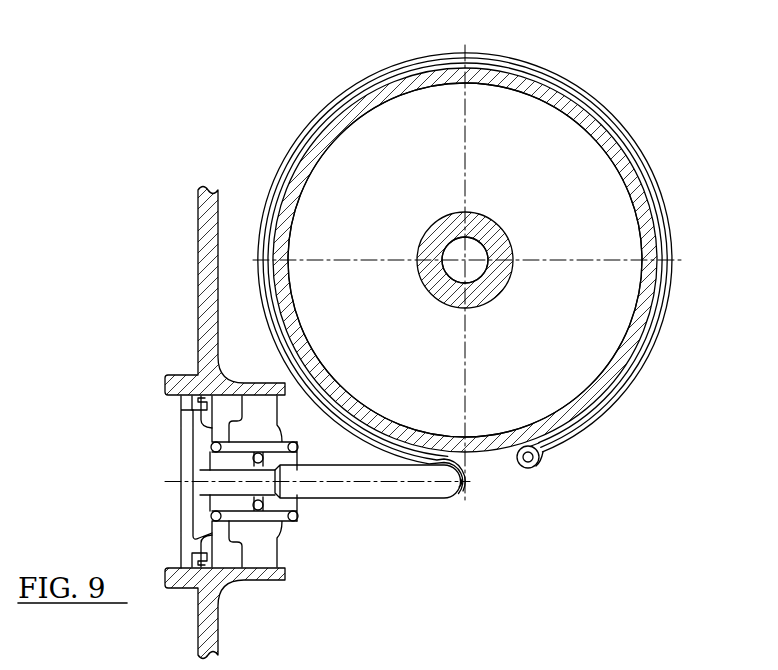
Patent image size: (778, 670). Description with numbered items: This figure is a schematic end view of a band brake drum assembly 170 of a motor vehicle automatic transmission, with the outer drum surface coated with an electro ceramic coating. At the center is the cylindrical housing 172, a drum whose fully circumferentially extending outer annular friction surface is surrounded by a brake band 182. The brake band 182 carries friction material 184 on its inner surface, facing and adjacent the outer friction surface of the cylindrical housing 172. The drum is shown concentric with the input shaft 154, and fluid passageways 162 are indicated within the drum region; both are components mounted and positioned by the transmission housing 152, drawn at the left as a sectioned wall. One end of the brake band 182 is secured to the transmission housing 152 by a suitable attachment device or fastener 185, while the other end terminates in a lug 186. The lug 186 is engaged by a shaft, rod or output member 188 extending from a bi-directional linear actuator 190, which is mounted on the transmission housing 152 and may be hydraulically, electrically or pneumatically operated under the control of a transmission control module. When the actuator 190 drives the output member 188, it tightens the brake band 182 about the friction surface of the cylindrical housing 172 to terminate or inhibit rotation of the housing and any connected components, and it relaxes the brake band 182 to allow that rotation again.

The band brake drum assembly 170 is at (698, 54).
The cylindrical housing 172 is at (654, 232).
The brake band 182 is at (633, 131).
The friction material 184 is at (641, 173).
The input shaft 154 is at (440, 229).
The fluid passageways 162 is at (443, 291).
The housing 152 is at (208, 277).
The fastener 185 is at (532, 461).
The lug 186 is at (467, 487).
The output member 188 is at (420, 492).
The bi-directional linear actuator 190 is at (265, 548).